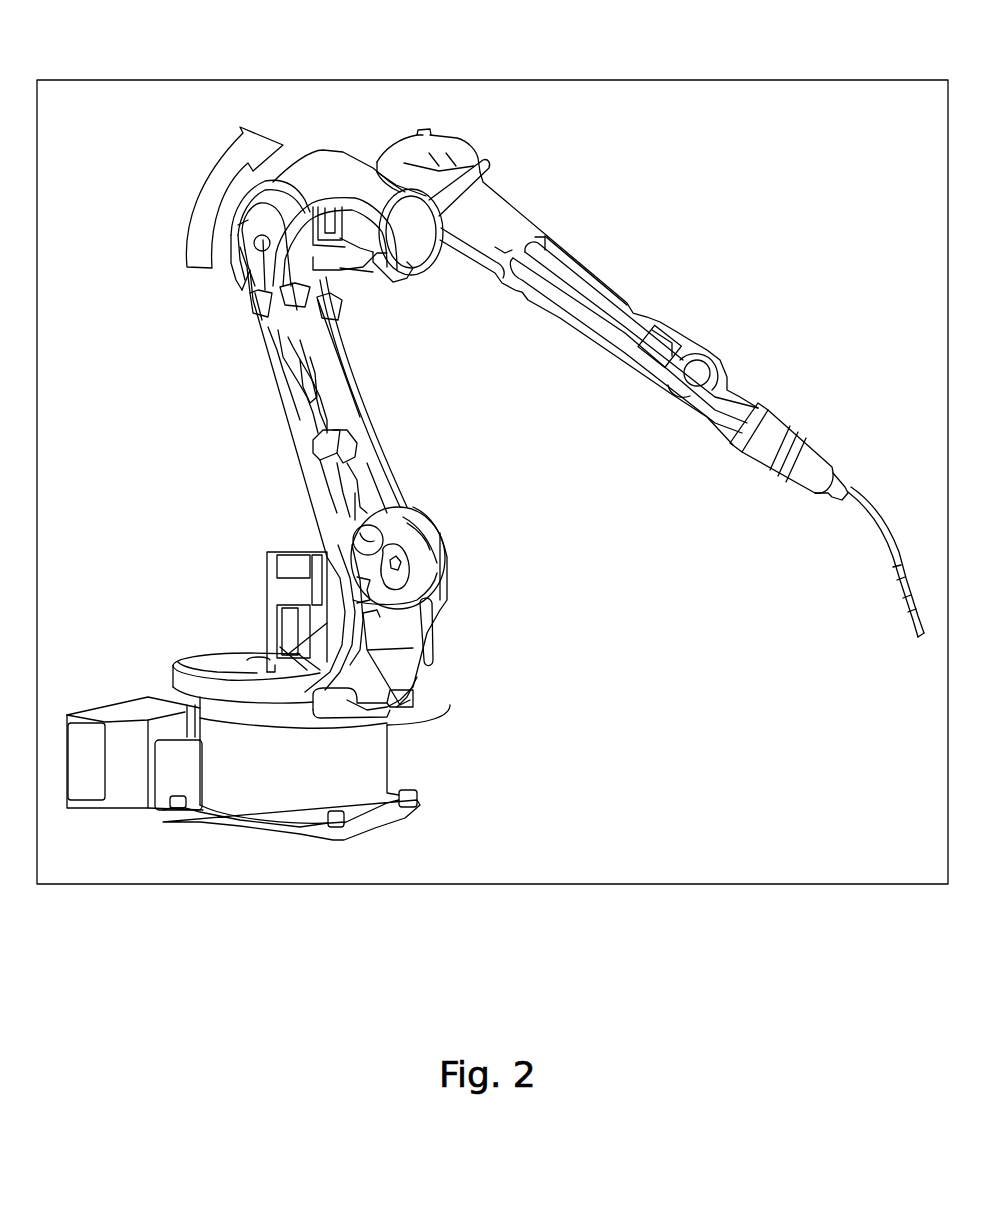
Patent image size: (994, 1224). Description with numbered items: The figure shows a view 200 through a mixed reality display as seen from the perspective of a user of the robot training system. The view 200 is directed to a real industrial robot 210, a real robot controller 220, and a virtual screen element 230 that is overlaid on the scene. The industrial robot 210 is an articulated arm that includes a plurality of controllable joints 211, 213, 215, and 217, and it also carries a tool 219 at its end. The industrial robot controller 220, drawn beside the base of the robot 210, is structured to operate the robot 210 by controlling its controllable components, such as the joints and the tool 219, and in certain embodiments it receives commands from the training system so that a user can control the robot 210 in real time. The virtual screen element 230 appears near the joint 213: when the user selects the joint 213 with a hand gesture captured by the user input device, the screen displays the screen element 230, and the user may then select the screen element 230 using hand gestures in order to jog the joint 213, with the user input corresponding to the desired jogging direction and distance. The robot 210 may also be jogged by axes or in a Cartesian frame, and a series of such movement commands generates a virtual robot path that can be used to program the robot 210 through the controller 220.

The view 200 is at (486, 80).
The industrial robot 210 is at (504, 628).
The controllable joint 211 is at (430, 580).
The controllable joint 213 is at (243, 262).
The controllable joint 215 is at (488, 182).
The controllable joint 217 is at (700, 360).
The tool 219 is at (895, 585).
The robot controller 220 is at (90, 780).
The virtual screen element 230 is at (188, 194).